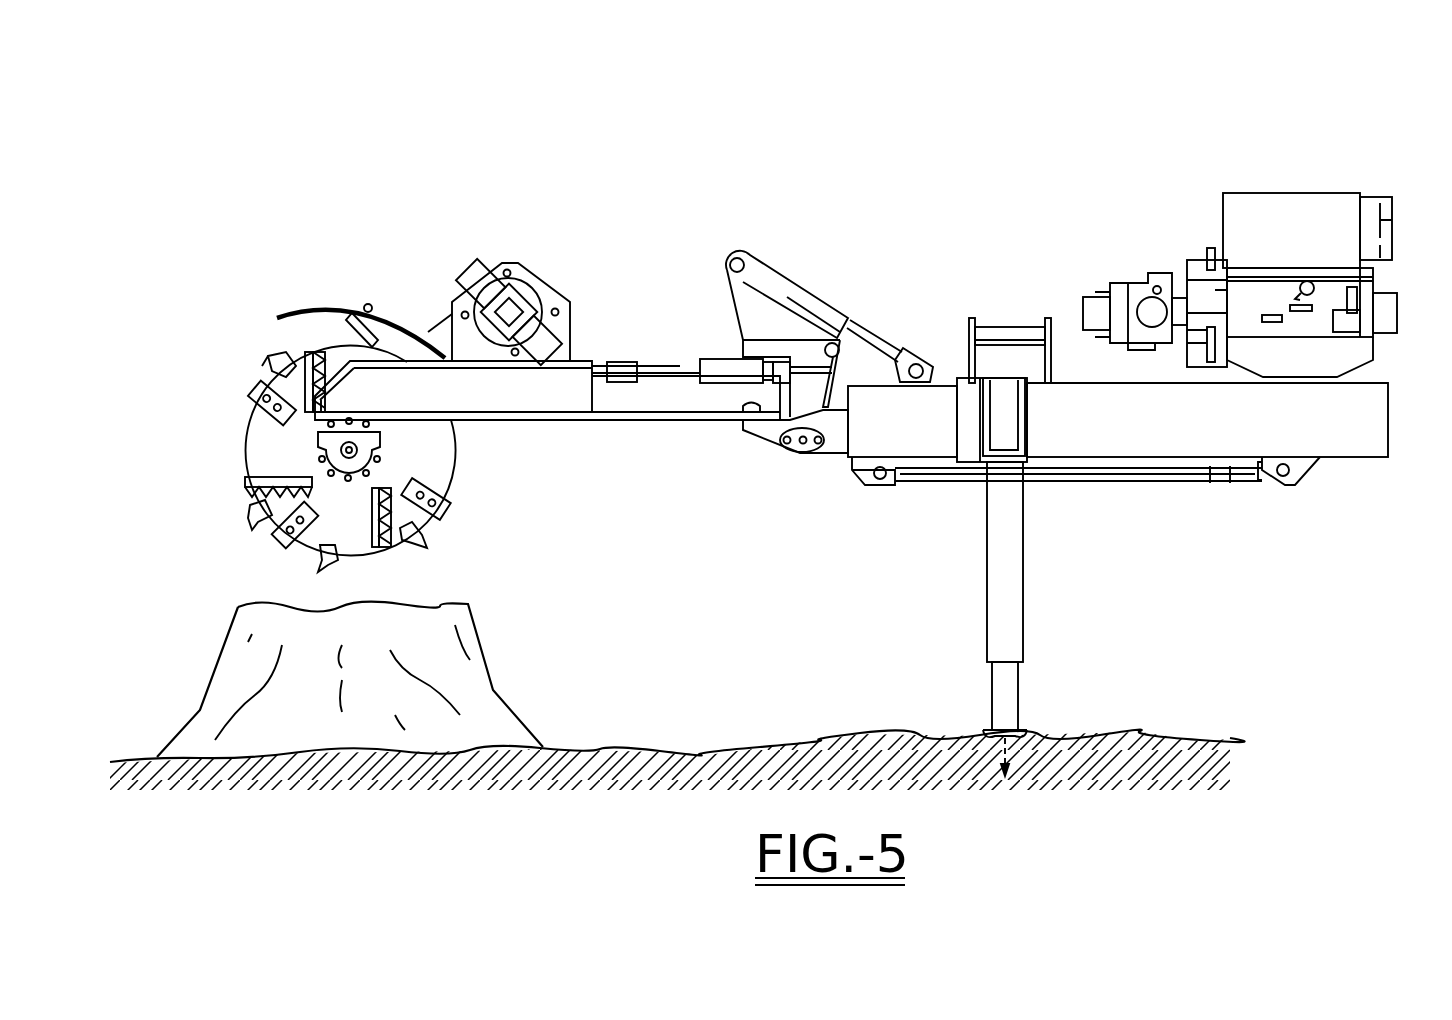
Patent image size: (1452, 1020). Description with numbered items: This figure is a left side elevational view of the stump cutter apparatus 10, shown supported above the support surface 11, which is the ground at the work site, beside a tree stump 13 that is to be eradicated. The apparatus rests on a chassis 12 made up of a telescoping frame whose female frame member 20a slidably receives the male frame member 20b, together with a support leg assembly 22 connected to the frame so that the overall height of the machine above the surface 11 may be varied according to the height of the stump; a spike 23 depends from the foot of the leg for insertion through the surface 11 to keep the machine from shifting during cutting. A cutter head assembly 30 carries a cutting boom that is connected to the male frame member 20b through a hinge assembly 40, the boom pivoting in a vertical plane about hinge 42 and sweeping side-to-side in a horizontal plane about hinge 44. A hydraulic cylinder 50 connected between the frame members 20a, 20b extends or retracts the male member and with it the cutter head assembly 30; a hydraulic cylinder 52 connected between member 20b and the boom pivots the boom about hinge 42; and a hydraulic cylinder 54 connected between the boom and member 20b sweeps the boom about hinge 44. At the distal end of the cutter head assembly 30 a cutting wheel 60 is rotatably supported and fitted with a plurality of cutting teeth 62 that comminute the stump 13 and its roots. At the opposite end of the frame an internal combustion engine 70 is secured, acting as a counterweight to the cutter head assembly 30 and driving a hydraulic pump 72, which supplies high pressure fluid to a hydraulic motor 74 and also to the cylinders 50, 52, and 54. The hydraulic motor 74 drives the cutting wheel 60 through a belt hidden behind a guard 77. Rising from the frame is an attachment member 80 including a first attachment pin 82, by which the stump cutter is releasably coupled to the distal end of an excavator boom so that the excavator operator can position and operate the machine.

The stump cutter apparatus 10 is at (824, 150).
The support surface 11 is at (668, 748).
The chassis 12 is at (1044, 432).
The tree stump 13 is at (470, 610).
The female frame member 20a is at (1368, 452).
The male frame member 20b is at (920, 448).
The support leg assembly 22 is at (1030, 601).
The spike 23 is at (1010, 735).
The cutter head assembly 30 is at (535, 432).
The hinge assembly 40 is at (716, 298).
The hinge 42 is at (805, 455).
The hinge 44 is at (743, 411).
The hydraulic cylinder 50 is at (1206, 481).
The hydraulic cylinder 52 is at (812, 300).
The hydraulic cylinder 54 is at (693, 372).
The cutting wheel 60 is at (245, 436).
The cutting teeth 62 is at (252, 492).
The internal combustion engine 70 is at (1320, 192).
The hydraulic pump 72 is at (1150, 275).
The hydraulic motor 74 is at (527, 300).
The guard 77 is at (437, 328).
The attachment member 80 is at (1001, 308).
The first attachment pin 82 is at (1020, 332).